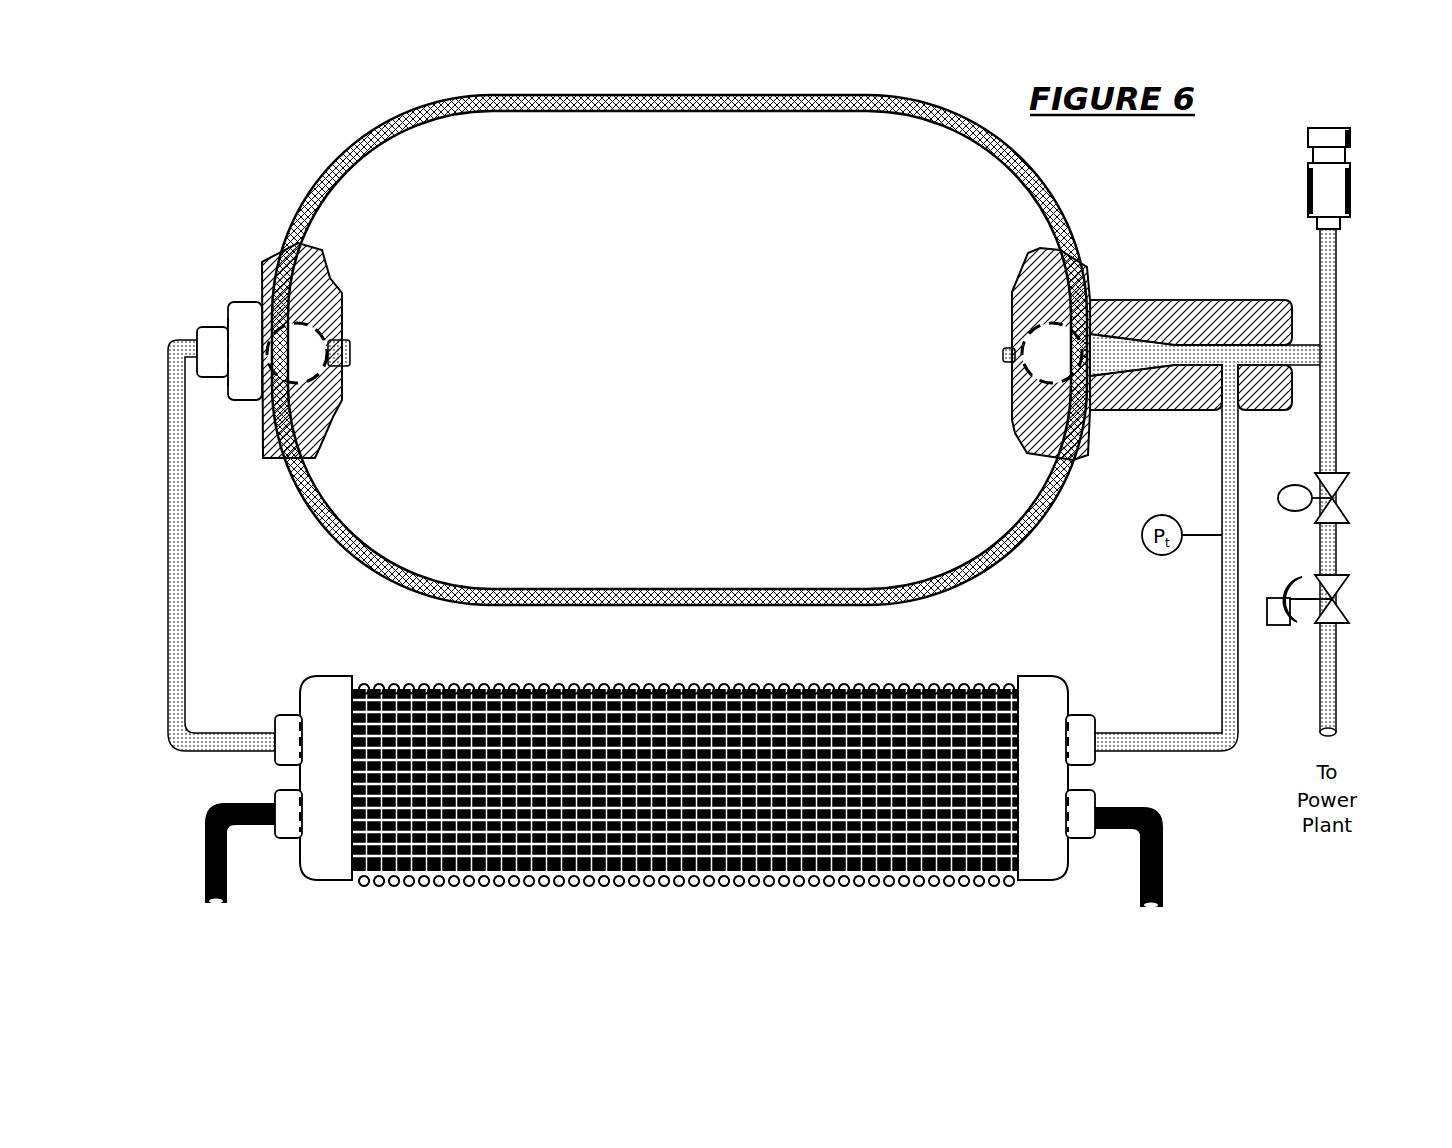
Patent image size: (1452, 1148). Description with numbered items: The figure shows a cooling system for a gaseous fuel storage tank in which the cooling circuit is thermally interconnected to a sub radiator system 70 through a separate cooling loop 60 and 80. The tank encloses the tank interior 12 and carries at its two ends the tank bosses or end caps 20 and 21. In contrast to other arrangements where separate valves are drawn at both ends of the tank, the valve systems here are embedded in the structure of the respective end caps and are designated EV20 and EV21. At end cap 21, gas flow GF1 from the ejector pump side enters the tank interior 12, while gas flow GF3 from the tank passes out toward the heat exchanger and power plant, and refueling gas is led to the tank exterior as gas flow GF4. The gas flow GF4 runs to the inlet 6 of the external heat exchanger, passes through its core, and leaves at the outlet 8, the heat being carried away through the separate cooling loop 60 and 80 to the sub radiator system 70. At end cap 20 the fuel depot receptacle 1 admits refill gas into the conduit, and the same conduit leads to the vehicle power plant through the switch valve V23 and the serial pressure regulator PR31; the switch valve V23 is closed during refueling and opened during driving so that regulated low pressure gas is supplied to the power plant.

The fuel depot receptacle 1 is at (1347, 218).
The inlet 6 is at (255, 732).
The outlet 8 is at (1110, 738).
The tank interior 12 is at (773, 547).
The end port assembly 20 is at (1130, 300).
The end port assembly 21 is at (277, 247).
The separate cooling loop 60 is at (205, 875).
The sub radiator system 70 is at (448, 878).
The separate cooling loop 80 is at (1162, 868).
The gas flow GF1 is at (1007, 350).
The gas flow GF3 is at (352, 347).
The gas flow to tank exterior GF4 is at (180, 343).
The embedded valve EV20 is at (1052, 353).
The embedded valve EV21 is at (297, 353).
The switch valve V23 is at (1333, 497).
The pressure regulator PR31 is at (1333, 608).